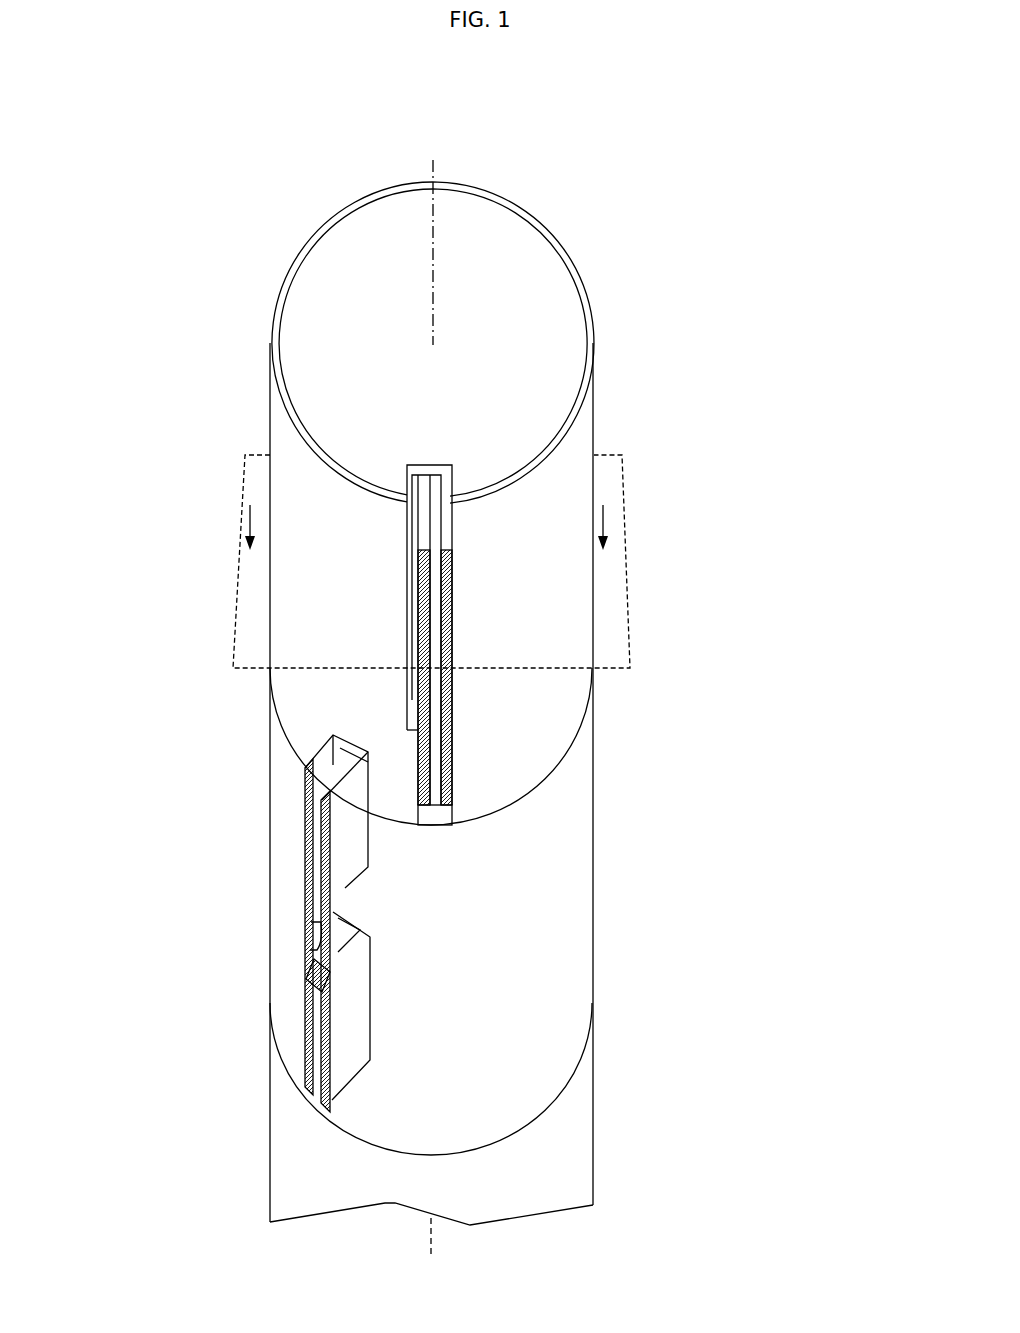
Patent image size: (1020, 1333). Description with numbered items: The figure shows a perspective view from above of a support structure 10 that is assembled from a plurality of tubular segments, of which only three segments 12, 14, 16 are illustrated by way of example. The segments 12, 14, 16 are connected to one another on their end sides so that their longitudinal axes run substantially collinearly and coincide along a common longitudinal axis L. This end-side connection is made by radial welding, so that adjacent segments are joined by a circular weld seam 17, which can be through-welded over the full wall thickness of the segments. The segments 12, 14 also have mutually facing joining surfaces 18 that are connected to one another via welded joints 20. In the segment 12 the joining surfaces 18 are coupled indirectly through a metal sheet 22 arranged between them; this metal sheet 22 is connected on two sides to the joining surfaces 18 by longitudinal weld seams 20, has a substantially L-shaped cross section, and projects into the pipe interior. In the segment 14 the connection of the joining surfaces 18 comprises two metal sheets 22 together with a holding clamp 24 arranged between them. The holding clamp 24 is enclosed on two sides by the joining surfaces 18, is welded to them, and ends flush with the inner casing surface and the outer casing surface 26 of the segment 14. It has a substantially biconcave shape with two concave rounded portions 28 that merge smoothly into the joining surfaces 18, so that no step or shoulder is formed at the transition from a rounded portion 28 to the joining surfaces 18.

The support structure 10 is at (696, 208).
The common longitudinal axis L is at (431, 313).
The segment 12 is at (290, 432).
The segment 14 is at (292, 752).
The segment 16 is at (285, 1185).
The circular weld seam 17 is at (497, 815).
The joining surfaces 18 is at (425, 550).
The longitudinal weld seams 20 is at (453, 683).
The metal sheet 22 is at (455, 622).
The holding clamp 24 is at (303, 956).
The outer casing surface 26 is at (500, 1040).
The concave rounded portions 28 is at (308, 970).